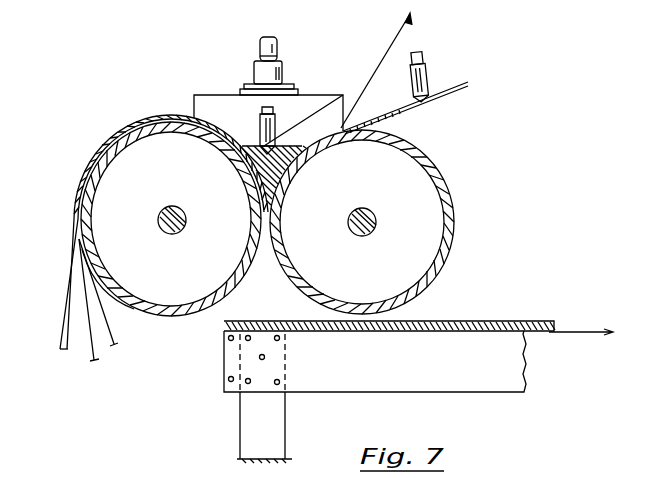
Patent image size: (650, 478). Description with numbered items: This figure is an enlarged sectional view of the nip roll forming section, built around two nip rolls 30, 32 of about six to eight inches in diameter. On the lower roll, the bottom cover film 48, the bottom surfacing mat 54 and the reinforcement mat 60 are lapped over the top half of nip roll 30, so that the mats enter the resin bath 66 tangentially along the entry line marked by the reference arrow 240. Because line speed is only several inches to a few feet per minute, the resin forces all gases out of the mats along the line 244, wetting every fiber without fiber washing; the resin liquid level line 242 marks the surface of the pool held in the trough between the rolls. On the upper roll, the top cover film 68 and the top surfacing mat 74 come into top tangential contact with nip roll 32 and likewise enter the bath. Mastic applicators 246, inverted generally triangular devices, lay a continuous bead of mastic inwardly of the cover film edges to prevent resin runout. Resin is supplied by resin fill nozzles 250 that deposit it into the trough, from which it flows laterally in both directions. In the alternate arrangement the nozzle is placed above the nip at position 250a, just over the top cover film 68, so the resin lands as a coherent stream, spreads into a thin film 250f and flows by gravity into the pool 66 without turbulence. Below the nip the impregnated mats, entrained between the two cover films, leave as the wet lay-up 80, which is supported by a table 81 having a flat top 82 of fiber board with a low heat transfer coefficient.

The nip roll 30 is at (199, 305).
The nip roll 32 is at (432, 170).
The reference arrow 240 is at (166, 110).
The line 244 is at (192, 108).
The reinforcement mat 60 is at (60, 318).
The bottom cover film 48 is at (113, 336).
The bottom surfacing mat 54 is at (93, 357).
The mastic applicator 246 is at (300, 84).
The resin liquid level line 242 is at (249, 138).
The resin bath 66 is at (246, 144).
The resin fill nozzle 250 is at (276, 116).
The top surfacing mat 74 is at (393, 32).
The top cover film 68 is at (413, 108).
The alternate nozzle position 250a is at (430, 78).
The thin film 250f is at (410, 100).
The wet lay-up 80 is at (535, 315).
The flat top 82 is at (308, 328).
The table 81 is at (220, 388).